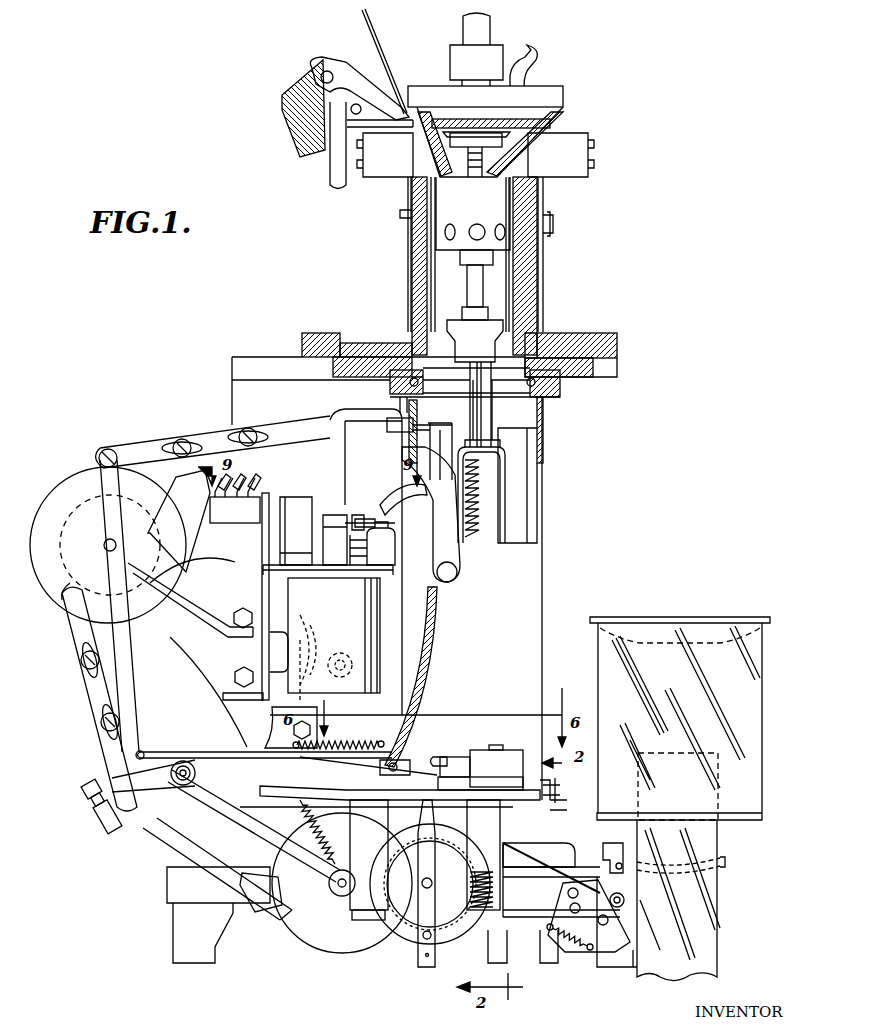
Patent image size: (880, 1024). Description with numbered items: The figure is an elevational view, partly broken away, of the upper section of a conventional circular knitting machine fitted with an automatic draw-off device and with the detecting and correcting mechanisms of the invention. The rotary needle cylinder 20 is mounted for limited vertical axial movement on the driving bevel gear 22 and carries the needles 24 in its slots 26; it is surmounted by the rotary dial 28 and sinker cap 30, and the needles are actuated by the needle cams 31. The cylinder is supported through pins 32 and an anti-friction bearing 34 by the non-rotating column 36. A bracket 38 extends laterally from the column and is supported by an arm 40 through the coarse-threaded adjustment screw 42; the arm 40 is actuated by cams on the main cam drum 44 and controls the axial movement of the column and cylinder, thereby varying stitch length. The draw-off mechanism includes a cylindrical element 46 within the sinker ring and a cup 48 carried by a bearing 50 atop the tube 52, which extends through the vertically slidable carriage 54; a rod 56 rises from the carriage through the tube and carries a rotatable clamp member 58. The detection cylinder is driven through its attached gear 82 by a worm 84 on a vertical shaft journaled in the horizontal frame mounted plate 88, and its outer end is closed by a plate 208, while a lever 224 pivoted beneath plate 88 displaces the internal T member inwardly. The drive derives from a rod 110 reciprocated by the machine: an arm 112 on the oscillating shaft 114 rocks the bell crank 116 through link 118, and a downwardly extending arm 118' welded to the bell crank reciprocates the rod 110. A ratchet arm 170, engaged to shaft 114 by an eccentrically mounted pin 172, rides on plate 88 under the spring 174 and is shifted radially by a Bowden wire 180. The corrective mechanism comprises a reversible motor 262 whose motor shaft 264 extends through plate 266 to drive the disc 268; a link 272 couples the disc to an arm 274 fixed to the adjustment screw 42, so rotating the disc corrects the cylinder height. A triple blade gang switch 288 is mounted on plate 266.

The rotary needle cylinder 20 is at (530, 292).
The driving bevel gear 22 is at (592, 352).
The needles 24 is at (540, 210).
The slots 26 is at (540, 265).
The rotary dial 28 is at (560, 108).
The sinker cap 30 is at (584, 154).
The needle cams 31 is at (553, 224).
The pins 32 is at (545, 342).
The anti-friction bearing 34 is at (546, 393).
The non-rotating column 36 is at (525, 582).
The bracket 38 is at (420, 502).
The arm 40 is at (394, 533).
The adjustment screw 42 is at (368, 520).
The main cam drum 44 is at (235, 580).
The cylindrical element 46 is at (530, 136).
The cup 48 is at (455, 197).
The bearing 50 is at (460, 262).
The tube 52 is at (472, 287).
The vertically slidable carriage 54 is at (448, 326).
The rod 56 is at (468, 162).
The rotatable clamp member 58 is at (452, 140).
The gear 82 is at (443, 935).
The worm 84 is at (474, 933).
The frame mounted plate 88 is at (550, 800).
The rod 110 is at (185, 843).
The arm 112 is at (157, 820).
The shaft 114 is at (167, 837).
The bell crank 116 is at (107, 499).
The link 118 is at (93, 699).
The downwardly extending arm 118' is at (67, 617).
The ratchet arm 170 is at (284, 798).
The eccentrically mounted pin 172 is at (130, 768).
The spring 174 is at (330, 838).
The Bowden wire 180 is at (433, 588).
The plate 208 is at (412, 905).
The lever 224 is at (427, 967).
The reversible reducing gear head shaded pole motor 262 is at (358, 649).
The motor shaft 264 is at (337, 578).
The plate 266 is at (368, 592).
The disc 268 is at (318, 537).
The link 272 is at (398, 430).
The arm 274 is at (358, 522).
The triple blade gang switch 288 is at (248, 525).